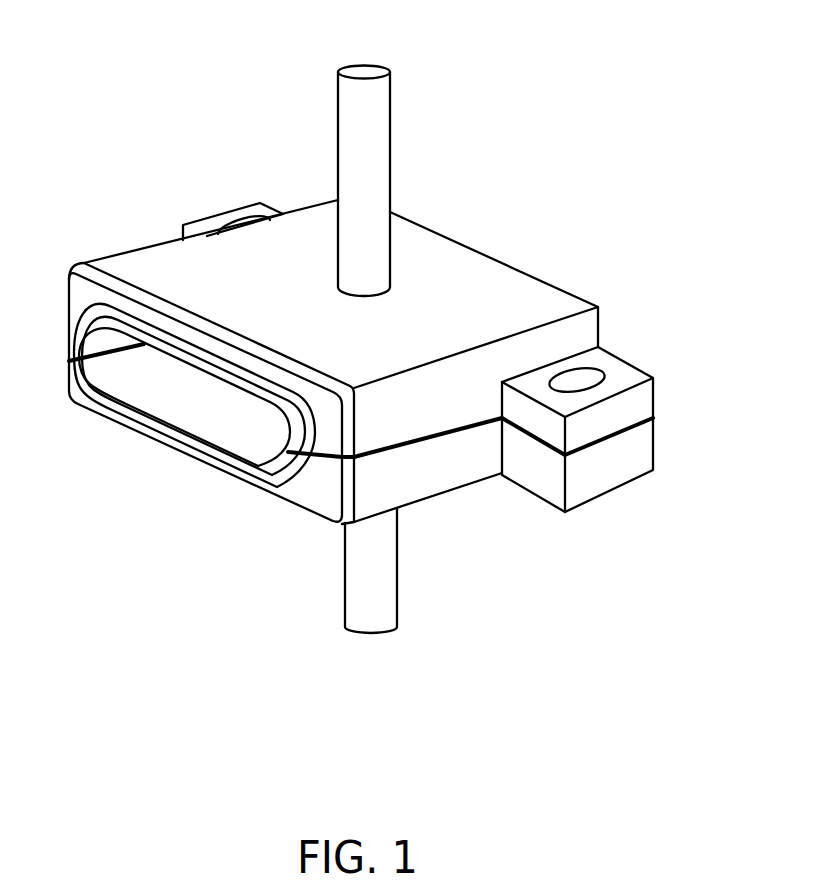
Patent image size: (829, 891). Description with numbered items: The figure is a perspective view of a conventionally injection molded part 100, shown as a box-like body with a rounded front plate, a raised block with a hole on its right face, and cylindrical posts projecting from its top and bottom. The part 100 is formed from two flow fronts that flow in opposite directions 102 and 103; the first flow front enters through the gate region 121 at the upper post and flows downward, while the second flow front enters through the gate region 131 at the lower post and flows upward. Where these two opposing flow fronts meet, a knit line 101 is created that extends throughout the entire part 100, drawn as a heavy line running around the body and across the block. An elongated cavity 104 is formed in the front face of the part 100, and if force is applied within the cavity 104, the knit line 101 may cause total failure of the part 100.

The conventionally molded part 100 is at (598, 16).
The knit line 101 is at (632, 420).
The first flow direction 102 is at (413, 190).
The second flow direction 103 is at (414, 516).
The cavity 104 is at (204, 414).
The first gate region 121 is at (363, 65).
The second gate region 131 is at (370, 632).